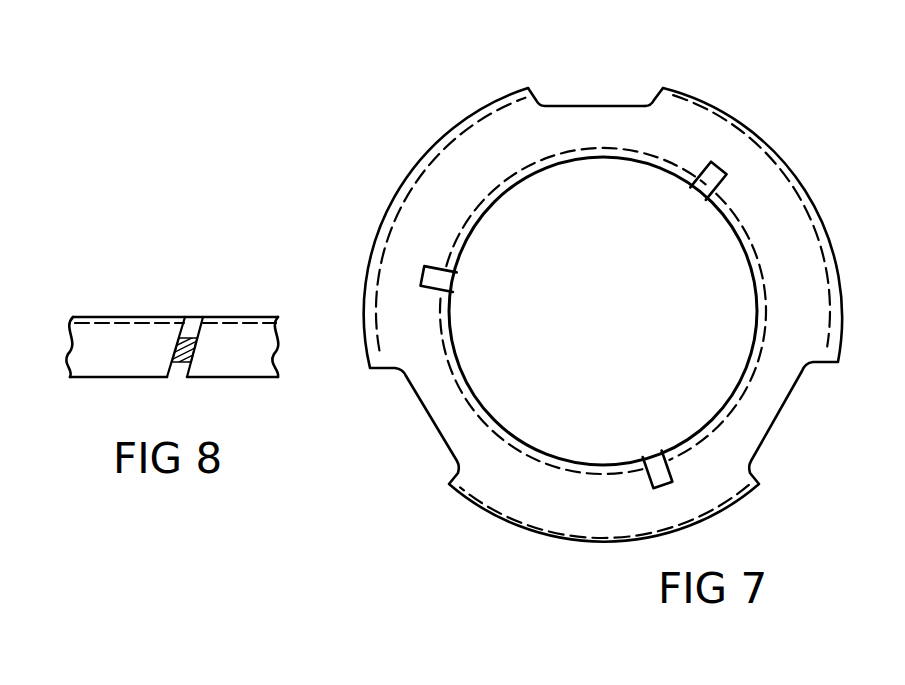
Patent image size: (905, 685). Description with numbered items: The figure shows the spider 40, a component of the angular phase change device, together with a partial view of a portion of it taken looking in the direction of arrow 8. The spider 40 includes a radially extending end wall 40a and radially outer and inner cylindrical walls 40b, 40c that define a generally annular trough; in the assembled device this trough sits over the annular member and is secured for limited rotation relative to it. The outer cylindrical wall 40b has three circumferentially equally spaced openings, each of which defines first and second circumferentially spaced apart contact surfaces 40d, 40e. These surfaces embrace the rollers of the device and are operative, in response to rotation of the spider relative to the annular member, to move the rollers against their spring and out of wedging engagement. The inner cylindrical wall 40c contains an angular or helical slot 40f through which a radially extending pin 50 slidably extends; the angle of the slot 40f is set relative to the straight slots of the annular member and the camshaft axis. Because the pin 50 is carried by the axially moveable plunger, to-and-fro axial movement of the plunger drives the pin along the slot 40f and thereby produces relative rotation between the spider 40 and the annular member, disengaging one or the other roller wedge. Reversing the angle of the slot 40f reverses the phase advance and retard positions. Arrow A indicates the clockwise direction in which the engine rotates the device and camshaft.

In FIG. 7, the spider 40 is at (570, 280).
In FIG. 7, the radially extending end wall 40a is at (416, 217).
In FIG. 8, the radially extending end wall 40a is at (118, 320).
In FIG. 7, the radially outer cylindrical wall 40b is at (374, 274).
In FIG. 7, the radially inner cylindrical wall 40c is at (480, 200).
In FIG. 8, the radially inner cylindrical wall 40c is at (115, 360).
In FIG. 7, the first contact surface 40d is at (539, 103).
In FIG. 7, the second contact surface 40e is at (651, 102).
In FIG. 7, the angular or helical slot 40f is at (444, 292).
In FIG. 8, the angular or helical slot 40f is at (173, 370).
In FIG. 8, the radially extending pin 50 is at (190, 323).
In FIG. 7, the arrow 8 is at (665, 238).
In FIG. 7, the arrow A is at (702, 60).